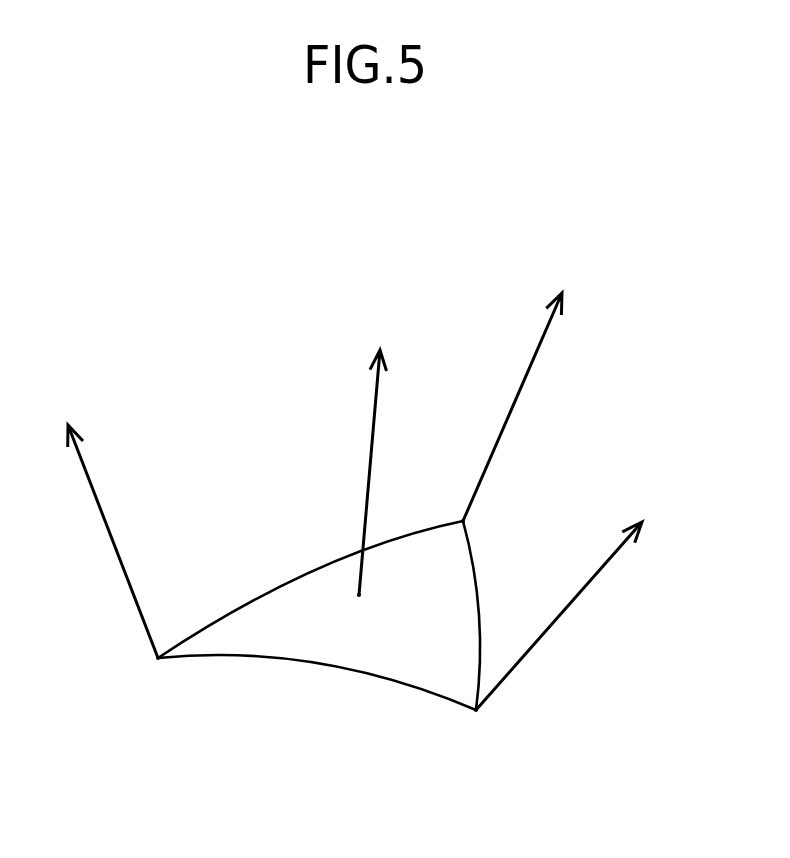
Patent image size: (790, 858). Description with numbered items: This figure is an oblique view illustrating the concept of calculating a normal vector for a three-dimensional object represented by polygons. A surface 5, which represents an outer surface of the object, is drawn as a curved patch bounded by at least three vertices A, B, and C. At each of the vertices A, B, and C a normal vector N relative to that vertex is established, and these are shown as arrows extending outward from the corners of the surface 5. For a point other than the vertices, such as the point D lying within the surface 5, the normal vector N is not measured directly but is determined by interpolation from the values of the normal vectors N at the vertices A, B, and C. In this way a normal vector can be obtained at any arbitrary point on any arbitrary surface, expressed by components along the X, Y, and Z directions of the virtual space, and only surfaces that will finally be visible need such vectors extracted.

The surface 5 is at (305, 647).
The normal vector N is at (362, 482).
The vertex A is at (147, 678).
The vertex B is at (482, 522).
The vertex C is at (477, 730).
The point D is at (355, 617).